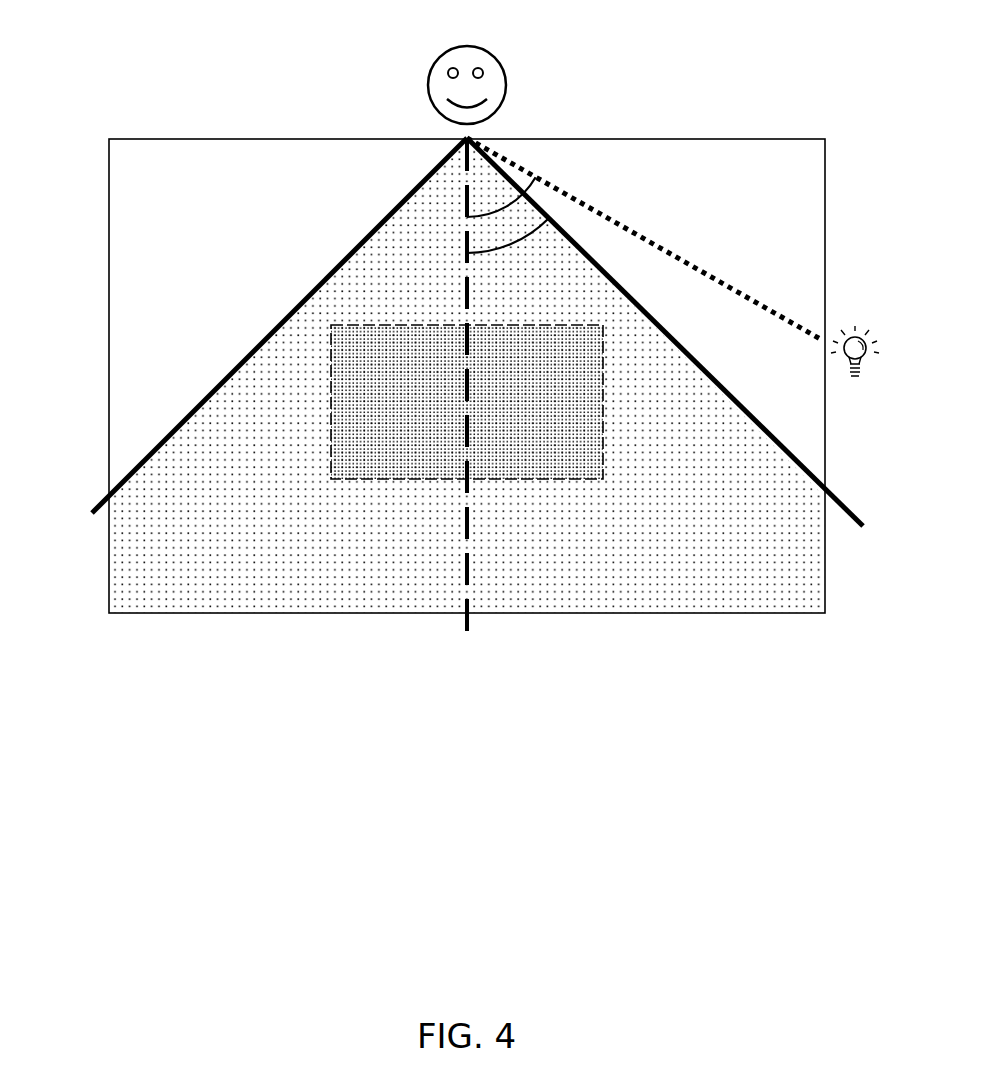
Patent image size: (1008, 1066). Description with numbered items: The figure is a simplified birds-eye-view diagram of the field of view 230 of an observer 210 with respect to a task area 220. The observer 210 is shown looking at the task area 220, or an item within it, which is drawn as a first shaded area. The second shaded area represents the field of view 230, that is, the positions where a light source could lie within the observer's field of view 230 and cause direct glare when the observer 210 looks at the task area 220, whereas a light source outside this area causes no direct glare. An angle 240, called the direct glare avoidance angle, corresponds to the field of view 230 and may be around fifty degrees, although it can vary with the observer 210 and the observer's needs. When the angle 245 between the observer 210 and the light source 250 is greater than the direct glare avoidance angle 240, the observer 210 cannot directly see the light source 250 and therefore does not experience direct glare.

The observer 210 is at (420, 68).
The task area 220 is at (351, 444).
The field of view 230 is at (131, 607).
The angle 240 is at (548, 219).
The angle between the observer and the light source 245 is at (536, 177).
The light source 250 is at (855, 322).